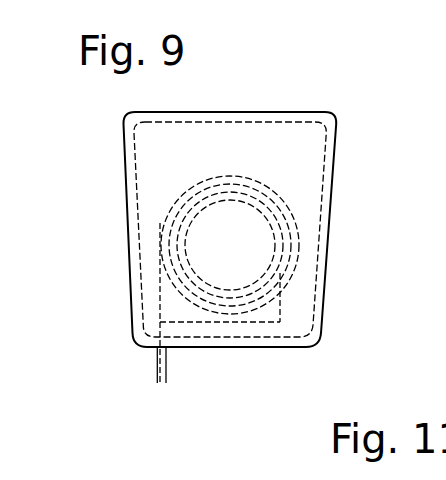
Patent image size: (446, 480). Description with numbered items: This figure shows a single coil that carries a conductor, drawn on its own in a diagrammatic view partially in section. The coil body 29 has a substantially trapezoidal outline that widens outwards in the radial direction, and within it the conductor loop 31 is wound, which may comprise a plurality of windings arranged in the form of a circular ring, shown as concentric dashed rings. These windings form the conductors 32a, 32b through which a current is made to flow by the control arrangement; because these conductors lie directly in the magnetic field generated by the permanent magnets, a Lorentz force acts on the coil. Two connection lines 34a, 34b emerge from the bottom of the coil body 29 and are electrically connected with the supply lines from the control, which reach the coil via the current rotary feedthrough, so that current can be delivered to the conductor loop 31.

The coil body 29 is at (245, 108).
The conductor loop 31 is at (172, 280).
The conductor 32a is at (177, 233).
The conductor 32b is at (290, 215).
The connection line 34a is at (155, 373).
The connection line 34b is at (167, 363).